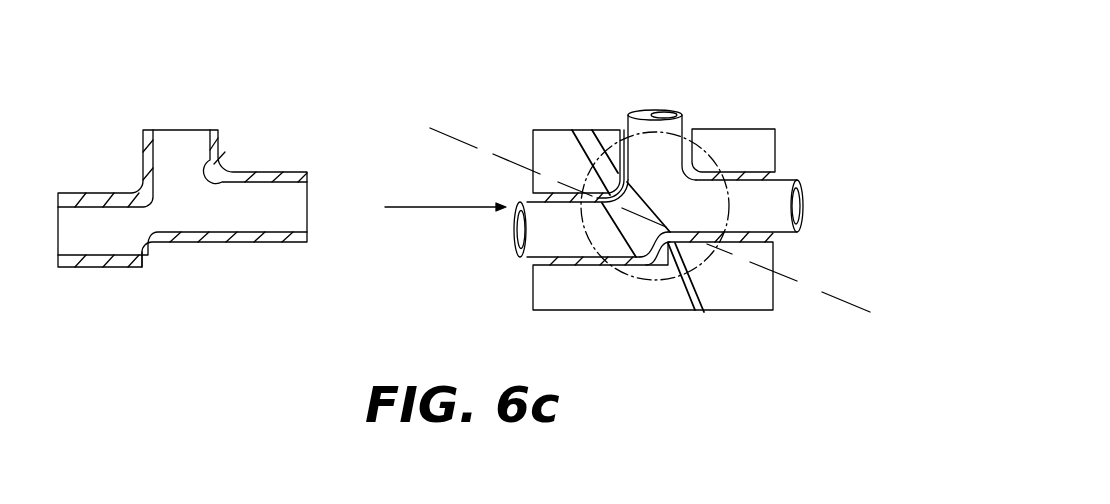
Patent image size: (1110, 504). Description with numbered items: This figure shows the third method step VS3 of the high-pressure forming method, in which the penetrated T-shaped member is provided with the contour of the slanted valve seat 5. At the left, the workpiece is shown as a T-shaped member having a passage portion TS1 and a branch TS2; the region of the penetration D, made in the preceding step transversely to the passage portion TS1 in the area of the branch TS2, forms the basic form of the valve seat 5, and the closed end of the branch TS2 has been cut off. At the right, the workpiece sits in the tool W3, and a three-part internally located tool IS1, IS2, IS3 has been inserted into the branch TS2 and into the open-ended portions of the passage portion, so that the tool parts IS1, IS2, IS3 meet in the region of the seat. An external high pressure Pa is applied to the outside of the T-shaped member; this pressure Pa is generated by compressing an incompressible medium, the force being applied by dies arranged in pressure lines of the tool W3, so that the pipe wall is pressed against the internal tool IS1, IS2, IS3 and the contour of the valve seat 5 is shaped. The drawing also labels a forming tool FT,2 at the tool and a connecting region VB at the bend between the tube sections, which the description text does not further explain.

The third method step VS3 is at (135, 66).
The branch TS2 is at (180, 152).
The passage portion TS1 is at (280, 222).
The penetration D is at (160, 259).
The external high pressure Pa is at (724, 338).
The internally located tool part IS3 is at (640, 122).
The forming tool FT,2 is at (752, 172).
The internally located tool part IS2 is at (800, 212).
The internally located tool part IS1 is at (528, 236).
The tool W3 is at (552, 297).
The connection bend region VB is at (633, 280).
The valve seat 5 is at (650, 262).